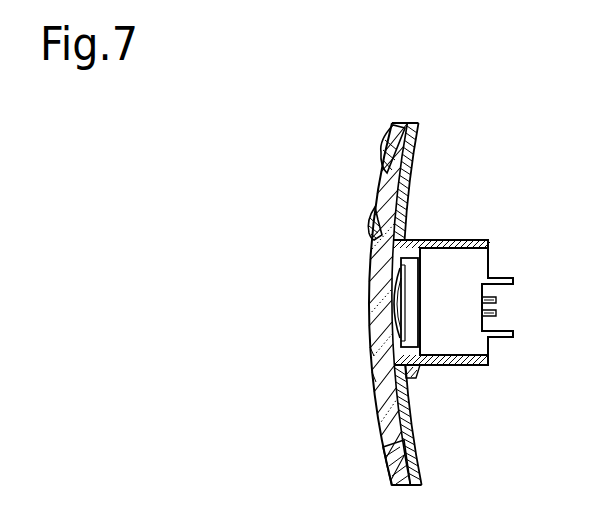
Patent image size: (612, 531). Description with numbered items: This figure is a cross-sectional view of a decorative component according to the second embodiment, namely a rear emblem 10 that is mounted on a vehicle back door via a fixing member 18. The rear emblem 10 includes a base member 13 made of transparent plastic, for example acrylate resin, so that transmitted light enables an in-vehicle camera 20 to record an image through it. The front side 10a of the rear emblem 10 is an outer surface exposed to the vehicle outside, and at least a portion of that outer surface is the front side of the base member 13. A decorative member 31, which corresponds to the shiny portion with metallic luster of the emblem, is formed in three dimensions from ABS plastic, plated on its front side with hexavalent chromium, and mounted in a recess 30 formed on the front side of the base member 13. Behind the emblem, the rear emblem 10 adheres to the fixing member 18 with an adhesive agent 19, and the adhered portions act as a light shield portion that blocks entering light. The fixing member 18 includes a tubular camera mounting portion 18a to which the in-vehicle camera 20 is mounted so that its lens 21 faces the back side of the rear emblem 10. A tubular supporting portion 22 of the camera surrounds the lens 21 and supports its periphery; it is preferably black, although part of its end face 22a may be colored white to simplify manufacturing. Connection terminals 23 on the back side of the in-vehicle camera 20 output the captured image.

The rear emblem 10 is at (360, 304).
The front side 10a is at (368, 270).
The base member 13 is at (372, 377).
The fixing member 18 is at (461, 244).
The camera mounting portion 18a is at (482, 240).
The adhesive agent 19 is at (406, 438).
The in-vehicle camera 20 is at (517, 296).
The lens 21 is at (392, 288).
The supporting portion 22 is at (410, 368).
The end face 22a is at (370, 352).
The connection terminals 23 is at (496, 300).
The recess 30 is at (383, 452).
The decorative member 31 is at (386, 462).